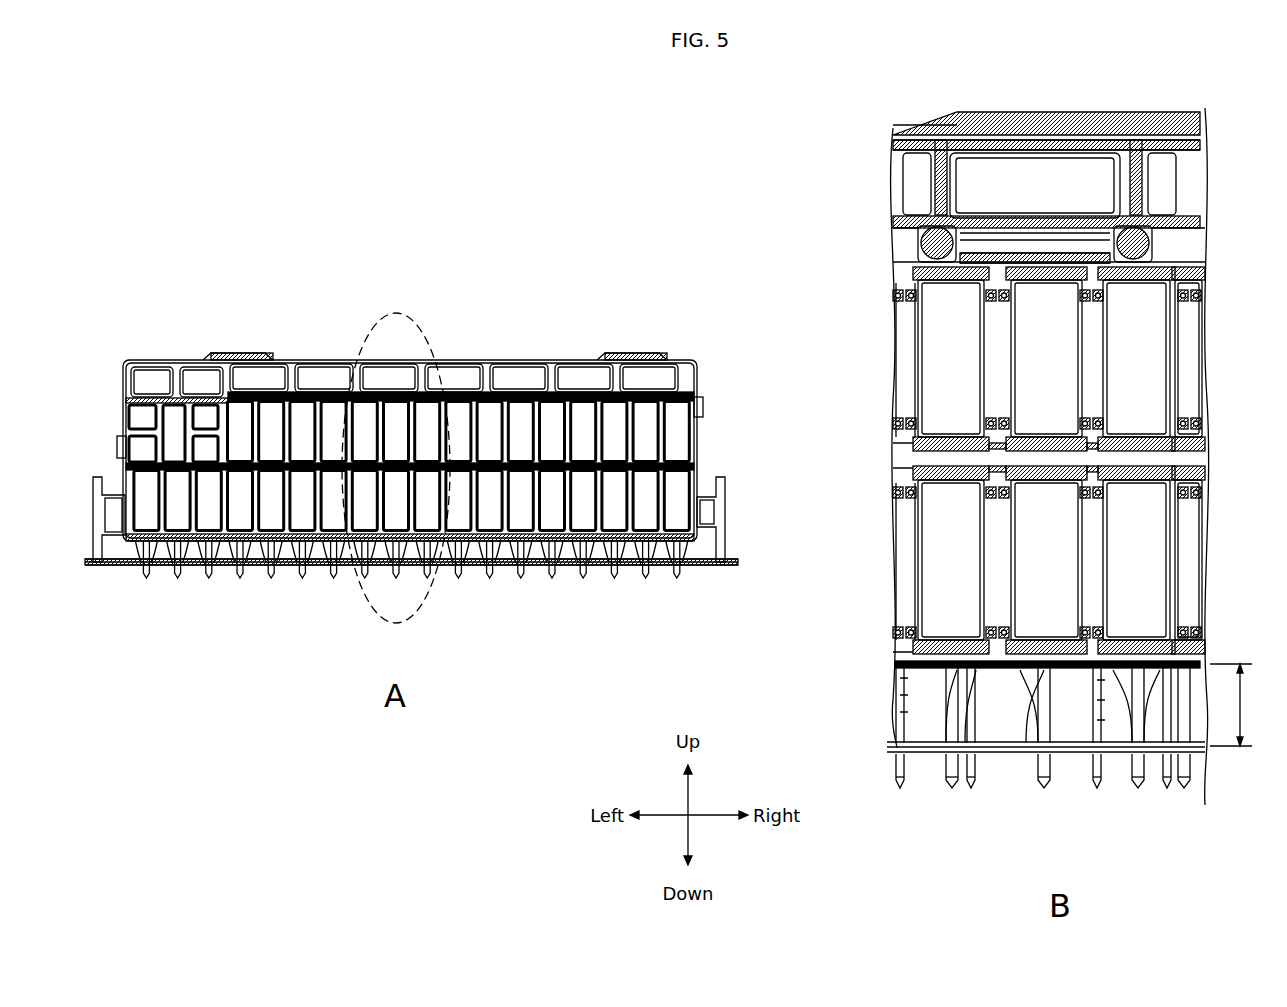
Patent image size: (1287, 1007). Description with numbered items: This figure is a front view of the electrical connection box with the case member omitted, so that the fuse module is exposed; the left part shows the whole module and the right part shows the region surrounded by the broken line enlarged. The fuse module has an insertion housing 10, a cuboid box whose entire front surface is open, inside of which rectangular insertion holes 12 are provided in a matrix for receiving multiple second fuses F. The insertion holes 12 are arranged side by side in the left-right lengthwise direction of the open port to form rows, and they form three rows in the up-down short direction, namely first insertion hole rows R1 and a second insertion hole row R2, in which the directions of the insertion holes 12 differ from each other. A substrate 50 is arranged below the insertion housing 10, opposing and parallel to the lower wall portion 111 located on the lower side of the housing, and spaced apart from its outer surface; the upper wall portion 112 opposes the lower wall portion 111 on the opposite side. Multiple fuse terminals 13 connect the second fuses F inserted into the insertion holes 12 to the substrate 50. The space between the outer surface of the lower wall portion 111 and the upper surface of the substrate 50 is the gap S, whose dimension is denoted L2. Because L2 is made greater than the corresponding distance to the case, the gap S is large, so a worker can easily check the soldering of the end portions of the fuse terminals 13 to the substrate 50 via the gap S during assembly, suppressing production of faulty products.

The insertion housing 10 is at (112, 400).
The insertion holes 12 is at (1168, 330).
The fuse terminals 13 is at (200, 556).
The substrate 50 is at (923, 753).
The lower wall portion 111 is at (630, 560).
The upper wall portion 112 is at (157, 362).
The second fuses F is at (317, 377).
The first insertion hole rows R1 is at (707, 435).
The second insertion hole row R2 is at (705, 372).
The gap S is at (165, 566).
The dimension of the gap L2 is at (1248, 705).